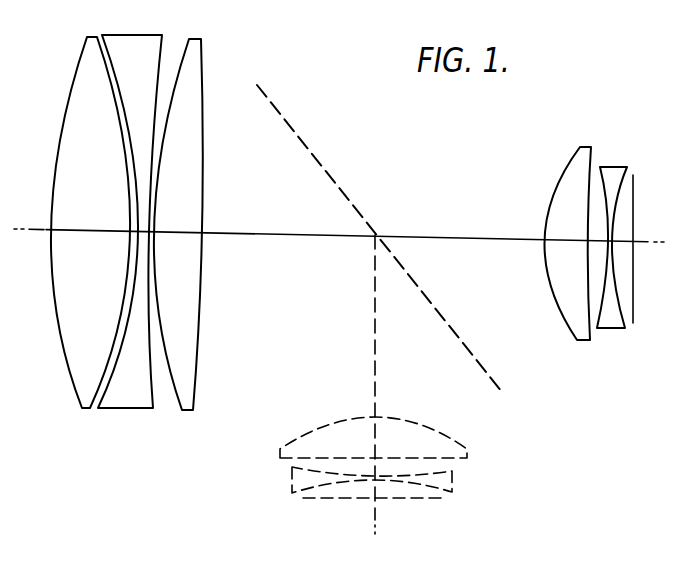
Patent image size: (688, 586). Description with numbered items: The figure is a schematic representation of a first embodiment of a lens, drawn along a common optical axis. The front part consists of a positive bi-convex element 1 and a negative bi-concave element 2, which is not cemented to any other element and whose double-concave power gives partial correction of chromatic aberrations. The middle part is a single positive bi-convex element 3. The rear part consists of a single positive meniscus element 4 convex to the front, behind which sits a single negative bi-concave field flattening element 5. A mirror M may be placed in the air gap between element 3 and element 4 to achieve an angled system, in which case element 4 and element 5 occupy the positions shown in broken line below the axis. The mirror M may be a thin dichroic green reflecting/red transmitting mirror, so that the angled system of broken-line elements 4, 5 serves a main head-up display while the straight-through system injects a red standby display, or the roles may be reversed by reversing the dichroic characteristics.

The positive bi-convex element 1 is at (92, 60).
The negative bi-concave element 2 is at (137, 57).
The positive bi-convex element 3 is at (193, 58).
The positive meniscus element 4 is at (582, 157).
The negative bi-concave field flattening element 5 is at (616, 175).
The mirror M is at (308, 144).